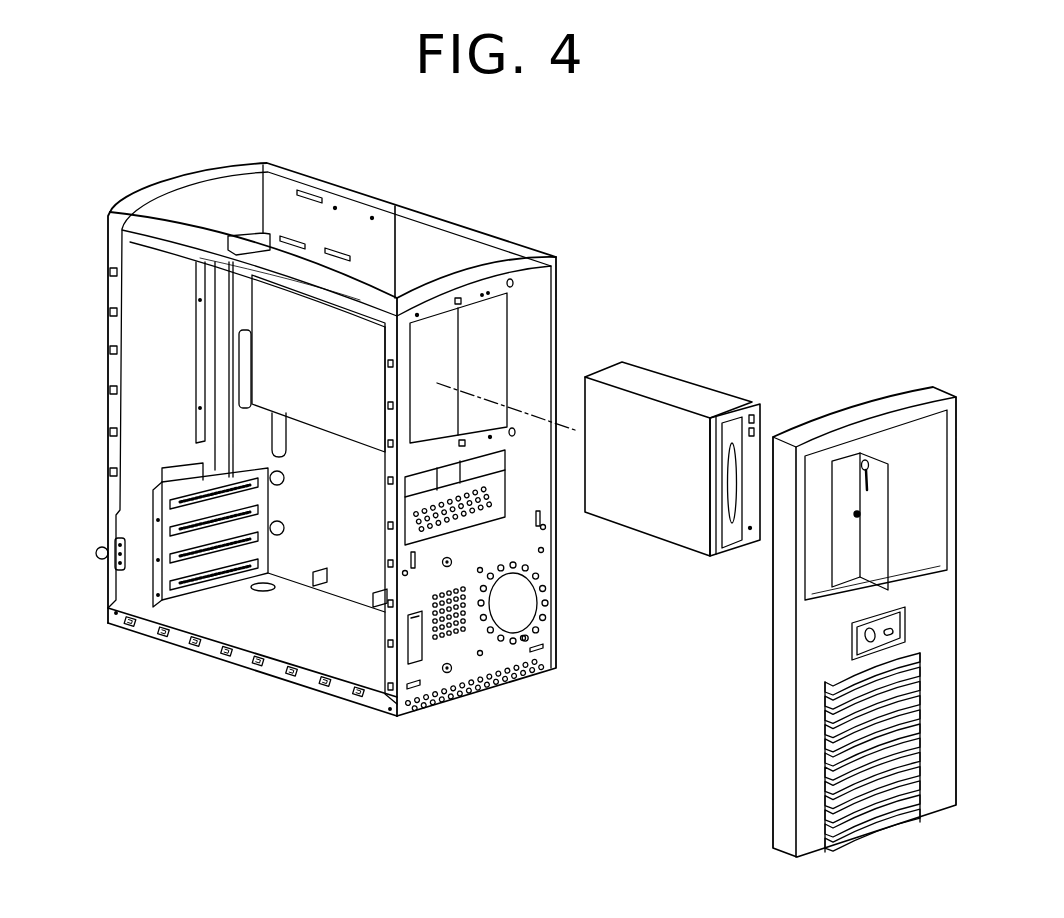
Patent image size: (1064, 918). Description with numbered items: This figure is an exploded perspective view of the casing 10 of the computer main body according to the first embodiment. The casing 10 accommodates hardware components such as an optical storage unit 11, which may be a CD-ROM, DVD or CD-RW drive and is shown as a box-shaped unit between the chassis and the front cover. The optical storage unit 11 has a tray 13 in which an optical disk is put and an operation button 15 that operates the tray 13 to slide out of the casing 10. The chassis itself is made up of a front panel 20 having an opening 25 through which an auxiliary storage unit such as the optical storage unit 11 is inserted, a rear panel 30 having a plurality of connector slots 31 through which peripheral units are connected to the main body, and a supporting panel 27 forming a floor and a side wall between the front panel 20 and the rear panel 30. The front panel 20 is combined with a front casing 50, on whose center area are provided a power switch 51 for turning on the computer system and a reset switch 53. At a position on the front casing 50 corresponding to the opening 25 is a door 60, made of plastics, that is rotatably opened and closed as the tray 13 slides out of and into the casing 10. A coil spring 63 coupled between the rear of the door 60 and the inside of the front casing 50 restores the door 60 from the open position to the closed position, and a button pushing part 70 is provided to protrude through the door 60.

The casing 10 is at (530, 535).
The optical storage unit 11 is at (695, 432).
The tray 13 is at (732, 427).
The operation button 15 is at (752, 415).
The front panel 20 is at (331, 509).
The opening 25 is at (440, 363).
The supporting panel 27 is at (343, 673).
The rear panel 30 is at (138, 590).
The connector slots 31 is at (243, 362).
The front casing 50 is at (838, 583).
The power switch 51 is at (903, 640).
The reset switch 53 is at (903, 608).
The door 60 is at (872, 455).
The coil spring 63 is at (858, 515).
The button pushing part 70 is at (862, 460).